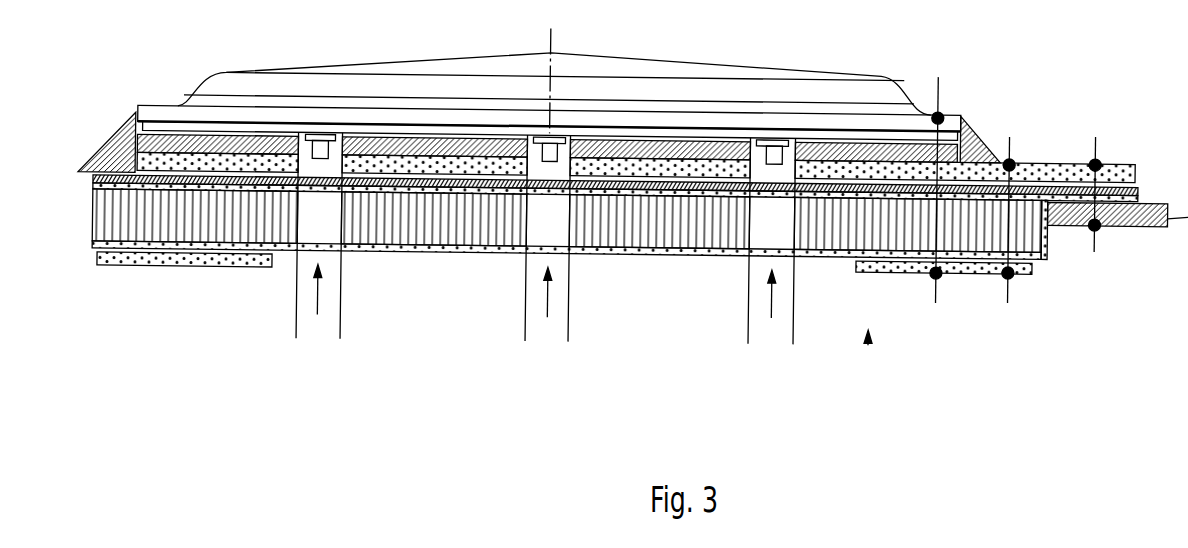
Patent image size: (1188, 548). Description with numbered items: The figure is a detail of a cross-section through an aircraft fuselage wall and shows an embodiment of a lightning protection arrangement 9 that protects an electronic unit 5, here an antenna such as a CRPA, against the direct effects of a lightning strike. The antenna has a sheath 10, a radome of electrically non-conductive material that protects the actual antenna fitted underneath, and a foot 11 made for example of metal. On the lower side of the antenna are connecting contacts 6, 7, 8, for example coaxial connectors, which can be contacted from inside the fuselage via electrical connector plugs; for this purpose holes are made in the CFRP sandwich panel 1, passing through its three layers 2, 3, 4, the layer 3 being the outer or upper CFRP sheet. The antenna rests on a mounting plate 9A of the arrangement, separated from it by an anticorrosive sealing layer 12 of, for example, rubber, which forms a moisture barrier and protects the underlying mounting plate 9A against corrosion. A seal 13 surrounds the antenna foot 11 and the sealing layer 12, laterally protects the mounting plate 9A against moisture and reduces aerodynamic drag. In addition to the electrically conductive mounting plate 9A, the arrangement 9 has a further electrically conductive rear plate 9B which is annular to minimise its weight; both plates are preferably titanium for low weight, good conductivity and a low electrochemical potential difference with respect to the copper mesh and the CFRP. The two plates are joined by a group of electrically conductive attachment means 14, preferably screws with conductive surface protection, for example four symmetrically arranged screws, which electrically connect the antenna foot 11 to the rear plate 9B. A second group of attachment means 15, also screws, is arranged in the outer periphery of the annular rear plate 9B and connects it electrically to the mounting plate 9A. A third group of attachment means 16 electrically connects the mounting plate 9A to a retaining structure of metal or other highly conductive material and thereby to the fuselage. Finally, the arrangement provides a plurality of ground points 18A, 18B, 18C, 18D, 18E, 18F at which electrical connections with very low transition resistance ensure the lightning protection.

The CFRP sandwich panel 1 is at (93, 219).
The layer of the CFRP sandwich panel 2 is at (222, 227).
The outer CFRP sheet 3 is at (98, 192).
The layer of the CFRP sandwich panel 4 is at (101, 249).
The electronic unit 5 is at (546, 41).
The connecting contact 6 is at (322, 165).
The connecting contact 7 is at (551, 169).
The connecting contact 8 is at (775, 166).
The lightning protection arrangement 9 is at (868, 345).
The mounting plate 9A is at (1135, 164).
The rear plate 9B is at (985, 271).
The sheath 10 is at (592, 76).
The antenna foot 11 is at (736, 120).
The anticorrosive sealing layer 12 is at (690, 146).
The seal 13 is at (111, 158).
The electrically conductive attachment means 14 is at (1140, 183).
The second group of attachment means 15 is at (1012, 298).
The third group of attachment means 16 is at (1101, 237).
The ground point 18A is at (931, 108).
The ground point 18B is at (931, 274).
The ground point 18C is at (1016, 275).
The ground point 18D is at (1012, 155).
The ground point 18E is at (1098, 154).
The ground point 18F is at (1103, 224).